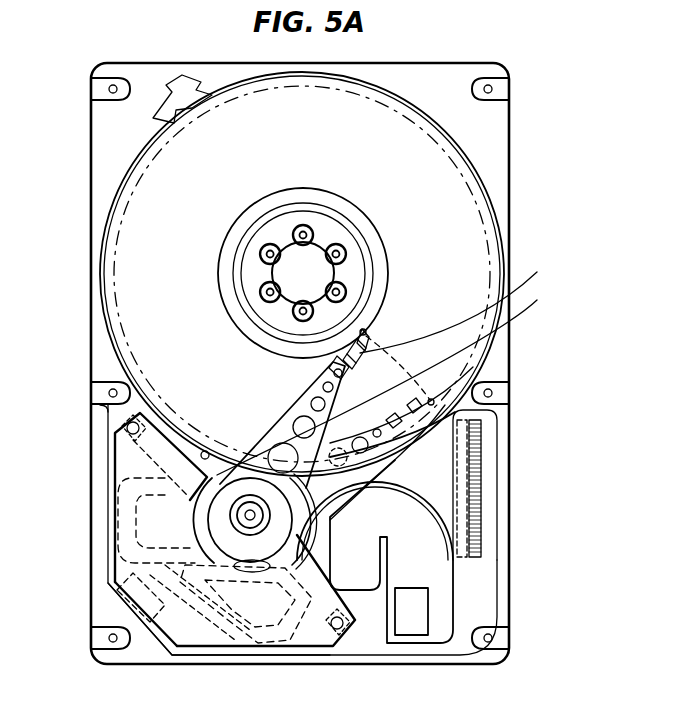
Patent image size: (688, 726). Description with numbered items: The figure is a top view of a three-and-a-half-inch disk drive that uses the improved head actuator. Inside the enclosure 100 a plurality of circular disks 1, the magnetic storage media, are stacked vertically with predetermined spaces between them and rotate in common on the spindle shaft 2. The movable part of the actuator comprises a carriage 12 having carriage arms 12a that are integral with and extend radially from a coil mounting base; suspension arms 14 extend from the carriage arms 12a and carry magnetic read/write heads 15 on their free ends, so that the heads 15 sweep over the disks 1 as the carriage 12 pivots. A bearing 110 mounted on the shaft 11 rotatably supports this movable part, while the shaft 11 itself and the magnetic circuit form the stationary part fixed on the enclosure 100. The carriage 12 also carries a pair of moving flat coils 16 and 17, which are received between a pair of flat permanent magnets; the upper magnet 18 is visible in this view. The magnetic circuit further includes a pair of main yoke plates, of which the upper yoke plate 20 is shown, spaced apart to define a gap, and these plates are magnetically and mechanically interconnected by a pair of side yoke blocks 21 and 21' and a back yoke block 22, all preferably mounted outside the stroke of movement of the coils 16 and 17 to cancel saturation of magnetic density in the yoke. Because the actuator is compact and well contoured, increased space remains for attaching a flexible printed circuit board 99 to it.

The enclosure 100 is at (492, 136).
The circular disks 1 is at (476, 262).
The spindle shaft 2 is at (330, 277).
The magnetic read/write heads 15 is at (463, 307).
The suspension arms 14 is at (392, 382).
The carriage arms 12a is at (432, 400).
The carriage 12 is at (300, 543).
The shaft 11 is at (249, 507).
The bearing 110 is at (224, 503).
The flexible printed circuit board 99 is at (395, 480).
The upper flat permanent magnet 18 is at (150, 470).
The side yoke block 21 is at (96, 430).
The side yoke block 21' is at (345, 659).
The moving flat coil 16 is at (115, 533).
The back yoke block 22 is at (130, 610).
The moving flat coil 17 is at (275, 645).
The main yoke plate 20 is at (197, 630).